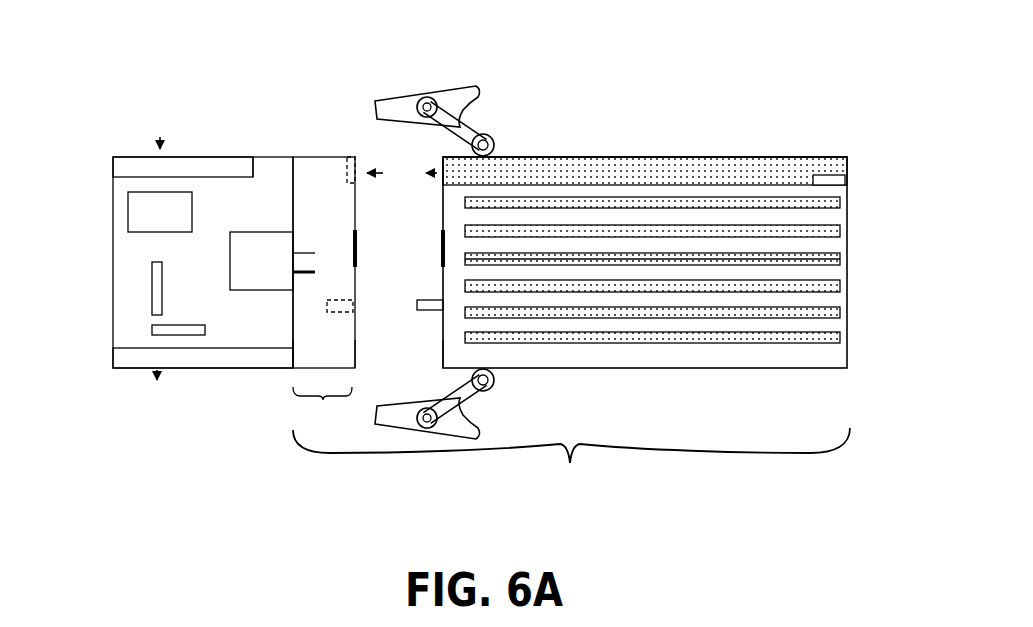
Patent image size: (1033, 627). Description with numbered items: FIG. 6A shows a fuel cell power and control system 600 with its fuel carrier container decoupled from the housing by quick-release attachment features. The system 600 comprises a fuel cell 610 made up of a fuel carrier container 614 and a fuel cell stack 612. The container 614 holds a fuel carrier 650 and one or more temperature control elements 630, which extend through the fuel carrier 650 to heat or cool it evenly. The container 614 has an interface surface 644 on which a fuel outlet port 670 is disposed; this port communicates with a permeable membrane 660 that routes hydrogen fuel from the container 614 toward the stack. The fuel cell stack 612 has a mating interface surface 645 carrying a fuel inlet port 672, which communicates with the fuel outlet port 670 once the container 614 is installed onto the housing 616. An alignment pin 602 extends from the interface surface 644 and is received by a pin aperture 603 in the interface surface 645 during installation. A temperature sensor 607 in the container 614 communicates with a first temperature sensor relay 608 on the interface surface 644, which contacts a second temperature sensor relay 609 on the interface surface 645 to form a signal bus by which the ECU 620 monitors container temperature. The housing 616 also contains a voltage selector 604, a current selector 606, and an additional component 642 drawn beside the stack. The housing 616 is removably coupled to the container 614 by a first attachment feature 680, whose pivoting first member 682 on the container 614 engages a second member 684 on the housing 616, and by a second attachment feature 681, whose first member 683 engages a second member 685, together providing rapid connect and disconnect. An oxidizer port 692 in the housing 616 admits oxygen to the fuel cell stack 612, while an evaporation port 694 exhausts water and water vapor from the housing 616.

The fuel cell power and control system 600 is at (86, 98).
The alignment pin 602 is at (425, 300).
The pin aperture 603 is at (355, 308).
The voltage selector 604 is at (157, 283).
The current selector 606 is at (158, 332).
The temperature sensor 607 is at (830, 177).
The first temperature sensor relay 608 is at (443, 252).
The second temperature sensor relay 609 is at (358, 242).
The fuel cell 610 is at (609, 298).
The fuel cell stack 612 is at (322, 409).
The fuel carrier container 614 is at (767, 155).
The housing 616 is at (228, 157).
The ECU 620 is at (128, 210).
The temperature control elements 630 is at (847, 262).
The component 642 is at (230, 268).
The interface surface 644 is at (443, 352).
The interface surface 645 is at (355, 362).
The fuel carrier 650 is at (765, 298).
The permeable membrane 660 is at (690, 170).
The fuel outlet port 670 is at (440, 158).
The fuel inlet port 672 is at (348, 157).
The first attachment feature 680 is at (364, 70).
The second attachment feature 681 is at (353, 472).
The first member 682 is at (440, 93).
The first member 683 is at (440, 432).
The second member 684 is at (305, 157).
The second member 685 is at (295, 370).
The oxidizer port 692 is at (183, 157).
The evaporation port 694 is at (200, 370).